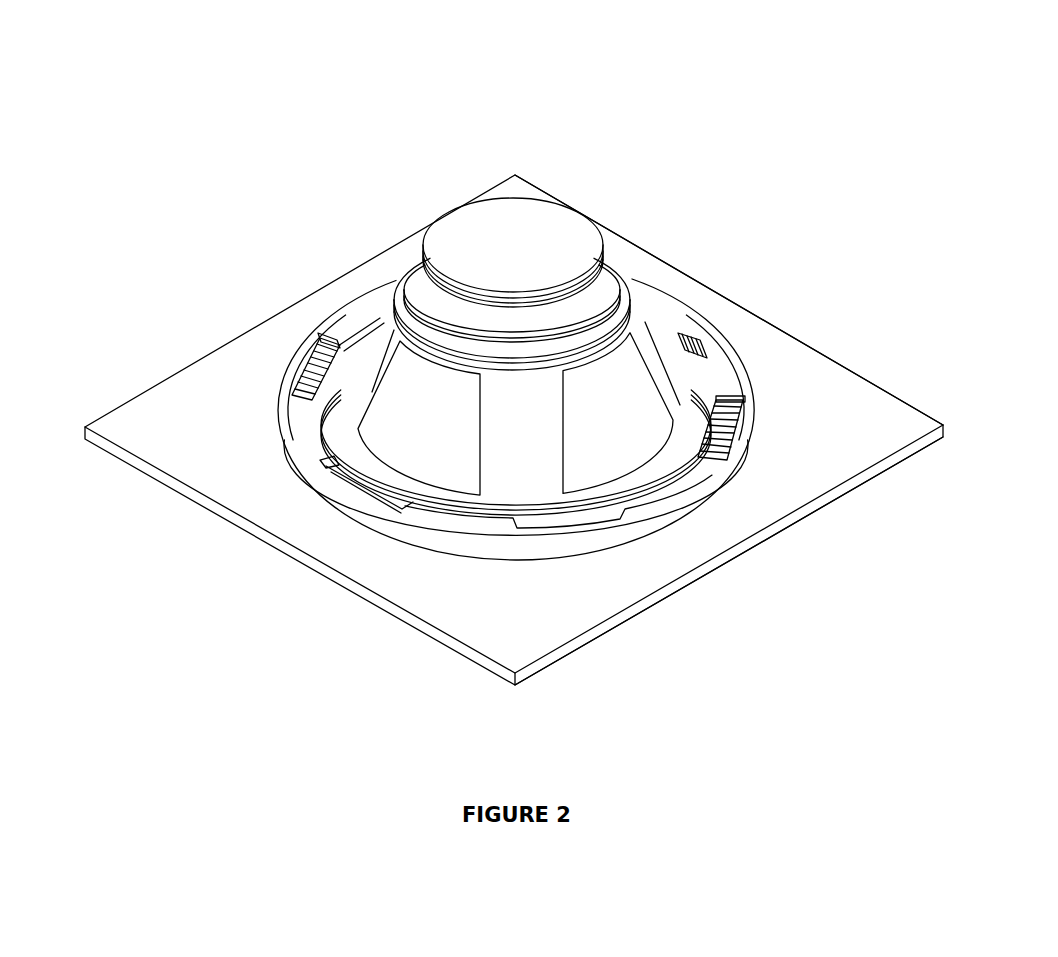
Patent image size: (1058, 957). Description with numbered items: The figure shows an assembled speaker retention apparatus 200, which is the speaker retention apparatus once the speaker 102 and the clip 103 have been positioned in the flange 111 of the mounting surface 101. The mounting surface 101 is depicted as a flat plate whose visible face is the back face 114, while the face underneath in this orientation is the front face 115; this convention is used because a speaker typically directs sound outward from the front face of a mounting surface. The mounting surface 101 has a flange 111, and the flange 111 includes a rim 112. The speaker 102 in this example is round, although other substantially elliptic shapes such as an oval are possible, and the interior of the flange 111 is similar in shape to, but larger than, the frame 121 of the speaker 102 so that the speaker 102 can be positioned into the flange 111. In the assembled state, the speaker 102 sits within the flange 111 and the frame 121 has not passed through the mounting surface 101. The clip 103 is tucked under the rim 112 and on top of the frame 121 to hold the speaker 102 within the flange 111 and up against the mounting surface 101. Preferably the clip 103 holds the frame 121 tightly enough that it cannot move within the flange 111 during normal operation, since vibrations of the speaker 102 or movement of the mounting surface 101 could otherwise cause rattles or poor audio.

The assembled speaker retention apparatus 200 is at (93, 48).
The mounting surface 101 is at (213, 427).
The speaker 102 is at (538, 441).
The clip 103 is at (321, 423).
The flange 111 is at (449, 547).
The rim 112 is at (667, 491).
The back face 114 is at (862, 400).
The front face 115 is at (857, 507).
The frame 121 is at (712, 409).